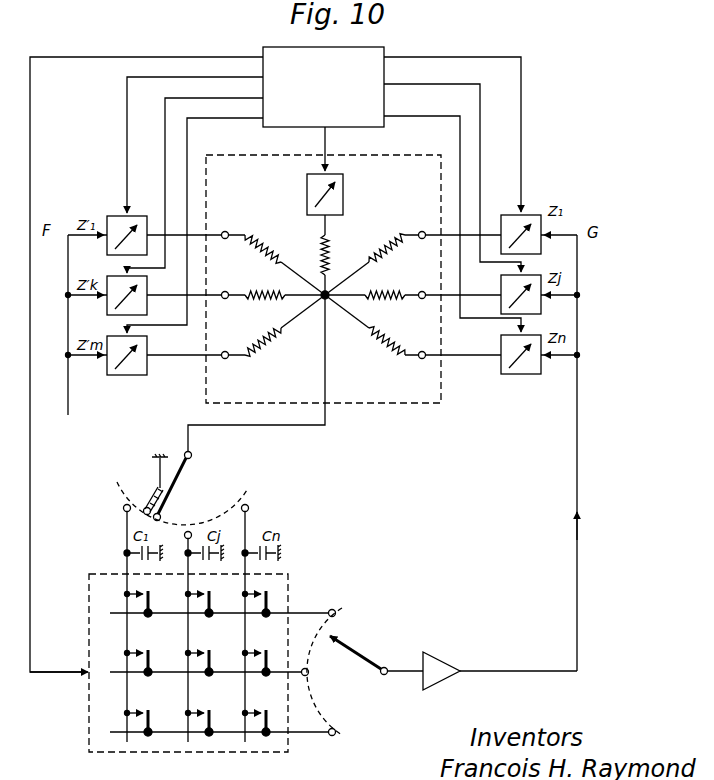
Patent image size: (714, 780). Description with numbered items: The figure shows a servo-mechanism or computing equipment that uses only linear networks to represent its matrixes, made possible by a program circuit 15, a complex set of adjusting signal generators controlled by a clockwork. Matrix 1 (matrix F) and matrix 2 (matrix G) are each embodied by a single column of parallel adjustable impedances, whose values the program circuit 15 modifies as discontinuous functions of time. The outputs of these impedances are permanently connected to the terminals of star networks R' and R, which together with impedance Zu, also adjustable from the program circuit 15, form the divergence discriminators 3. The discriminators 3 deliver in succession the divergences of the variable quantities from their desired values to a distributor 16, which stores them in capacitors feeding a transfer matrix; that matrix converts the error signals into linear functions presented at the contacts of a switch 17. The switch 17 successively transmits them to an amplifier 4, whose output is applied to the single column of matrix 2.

The program circuit 15 is at (323, 87).
The matrix 1 is at (127, 305).
The matrix 2 is at (521, 305).
The divergence discriminators 3 is at (421, 396).
The distributor 16 is at (199, 507).
The switch 17 is at (381, 620).
The amplifier 4 is at (424, 666).